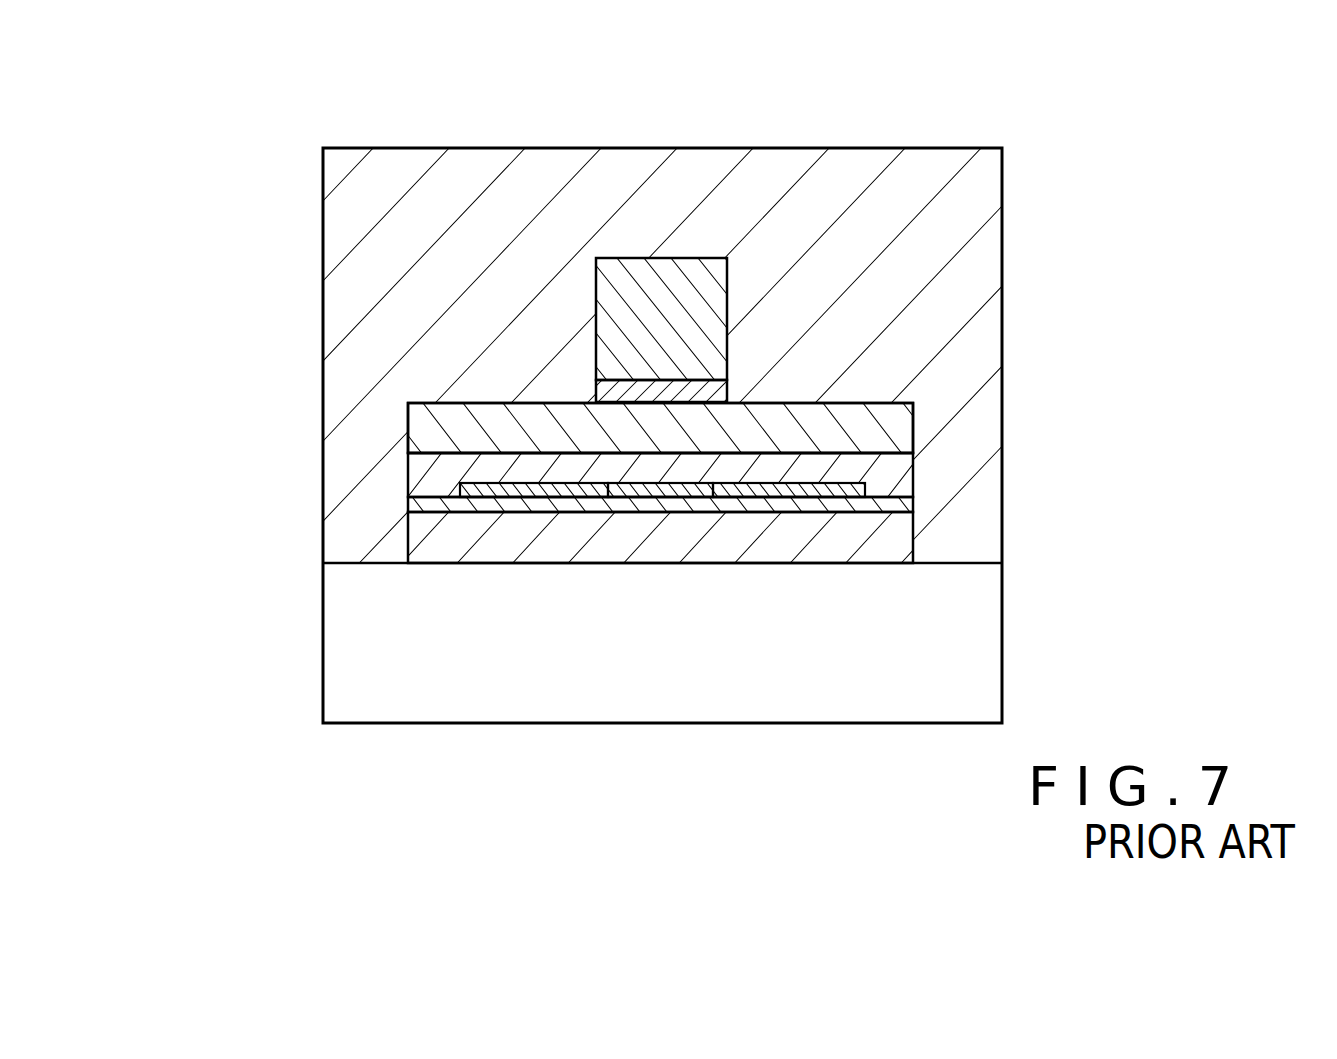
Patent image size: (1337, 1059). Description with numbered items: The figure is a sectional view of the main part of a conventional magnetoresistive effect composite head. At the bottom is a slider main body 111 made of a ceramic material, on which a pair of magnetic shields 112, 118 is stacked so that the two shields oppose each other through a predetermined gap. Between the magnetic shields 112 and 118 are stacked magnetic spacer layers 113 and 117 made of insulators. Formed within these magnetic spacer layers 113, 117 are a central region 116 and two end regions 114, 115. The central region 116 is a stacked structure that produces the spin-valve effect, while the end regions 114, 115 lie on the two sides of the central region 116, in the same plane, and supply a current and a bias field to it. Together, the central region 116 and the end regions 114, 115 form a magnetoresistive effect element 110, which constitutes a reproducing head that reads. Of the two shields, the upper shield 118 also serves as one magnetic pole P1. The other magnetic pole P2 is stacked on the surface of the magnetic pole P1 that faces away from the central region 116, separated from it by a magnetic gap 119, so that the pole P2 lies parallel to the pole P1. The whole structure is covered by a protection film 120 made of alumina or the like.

The magnetoresistive effect element 110 is at (660, 673).
The slider main body 111 is at (385, 637).
The magnetic shield 112 is at (900, 537).
The magnetic spacer layer 113 is at (903, 503).
The end region 114 is at (551, 491).
The end region 115 is at (777, 488).
The central region 116 is at (663, 487).
The magnetic spacer layer 117 is at (890, 473).
The upper shield 118 is at (890, 430).
The magnetic pole P1 is at (780, 424).
The magnetic gap 119 is at (722, 391).
The magnetic pole P2 is at (687, 272).
The protection film 120 is at (410, 180).